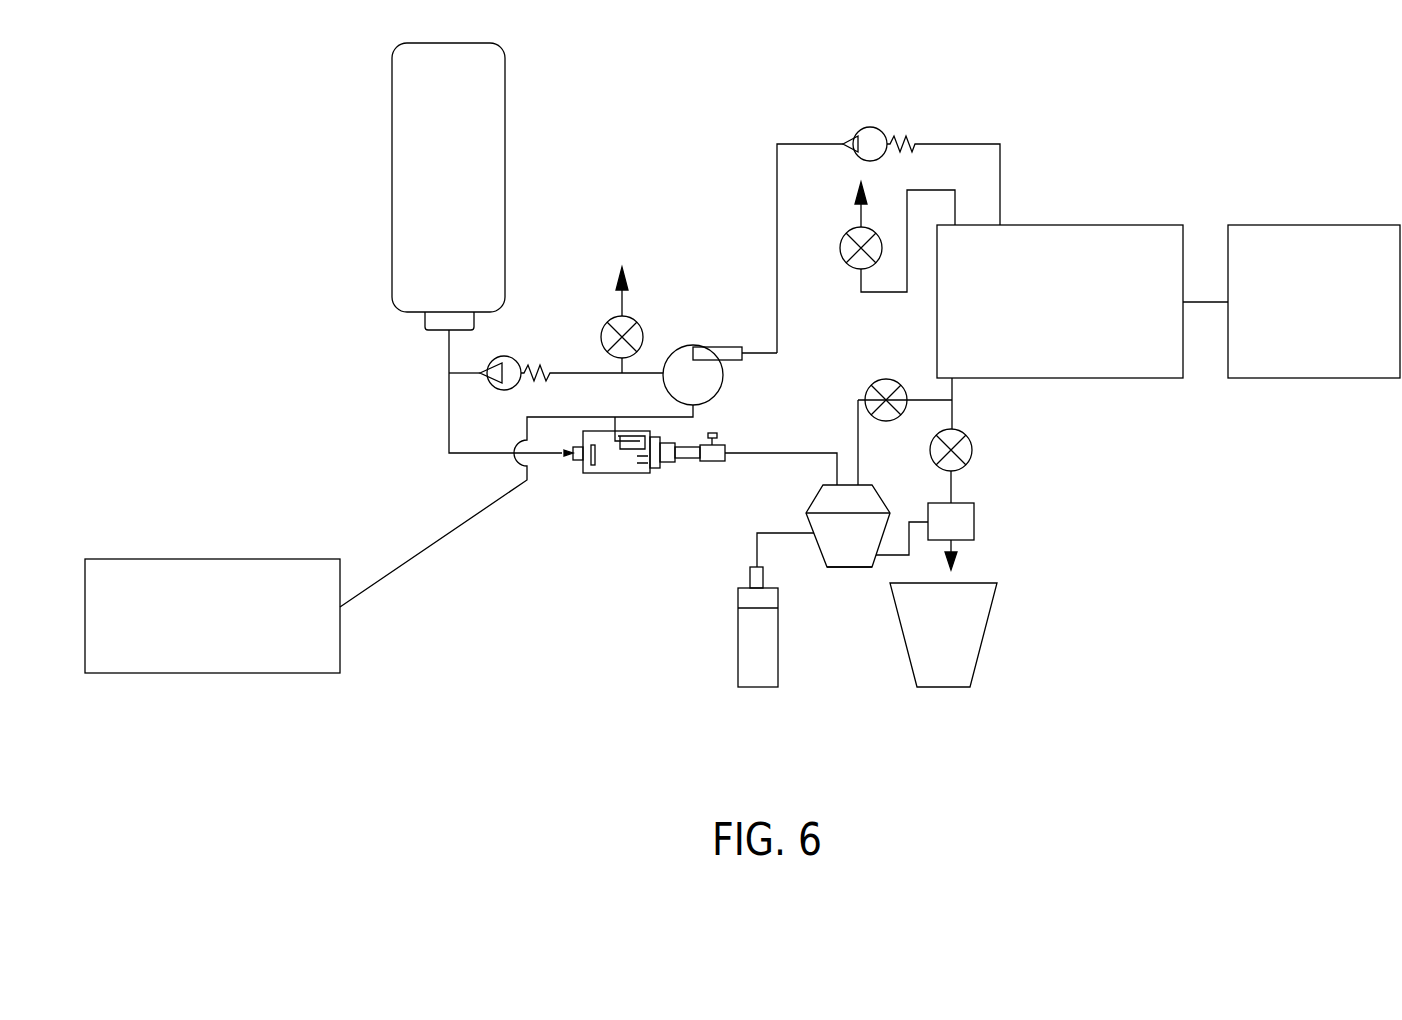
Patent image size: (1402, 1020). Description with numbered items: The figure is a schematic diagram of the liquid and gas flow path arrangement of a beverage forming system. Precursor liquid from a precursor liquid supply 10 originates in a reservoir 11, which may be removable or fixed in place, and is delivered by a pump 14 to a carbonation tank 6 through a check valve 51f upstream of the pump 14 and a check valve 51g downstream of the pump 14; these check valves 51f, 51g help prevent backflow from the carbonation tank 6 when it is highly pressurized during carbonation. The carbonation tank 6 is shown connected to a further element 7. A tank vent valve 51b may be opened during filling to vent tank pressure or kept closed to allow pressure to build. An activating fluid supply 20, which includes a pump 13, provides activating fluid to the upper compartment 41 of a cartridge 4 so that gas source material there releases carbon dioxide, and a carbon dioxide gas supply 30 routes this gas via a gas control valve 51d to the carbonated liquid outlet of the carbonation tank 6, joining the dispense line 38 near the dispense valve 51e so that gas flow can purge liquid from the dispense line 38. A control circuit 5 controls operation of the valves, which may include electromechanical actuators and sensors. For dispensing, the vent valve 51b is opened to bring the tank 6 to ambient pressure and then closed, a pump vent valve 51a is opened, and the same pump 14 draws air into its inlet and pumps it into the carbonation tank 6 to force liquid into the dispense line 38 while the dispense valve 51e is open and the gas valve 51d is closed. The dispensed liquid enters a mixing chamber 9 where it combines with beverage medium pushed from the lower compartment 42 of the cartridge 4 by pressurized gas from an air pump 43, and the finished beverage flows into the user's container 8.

The cartridge 4 is at (838, 583).
The control circuit 5 is at (212, 559).
The carbonation tank 6 is at (1097, 225).
The downstream unit 7 is at (1318, 225).
The container 8 is at (1000, 630).
The mixing chamber 9 is at (975, 522).
The precursor liquid supply 10 is at (624, 252).
The reservoir 11 is at (392, 217).
The pump 13 is at (662, 483).
The pump 14 is at (722, 335).
The activating fluid supply 20 is at (537, 492).
The carbon dioxide gas supply 30 is at (852, 378).
The dispense line 38 is at (953, 418).
The upper compartment 41 is at (822, 502).
The lower compartment 42 is at (858, 558).
The air pump 43 is at (720, 632).
The pump vent valve 51a is at (605, 325).
The tank vent valve 51b is at (842, 249).
The gas control valve 51d is at (887, 379).
The dispense valve 51e is at (972, 452).
The check valve 51f is at (502, 378).
The check valve 51g is at (860, 128).